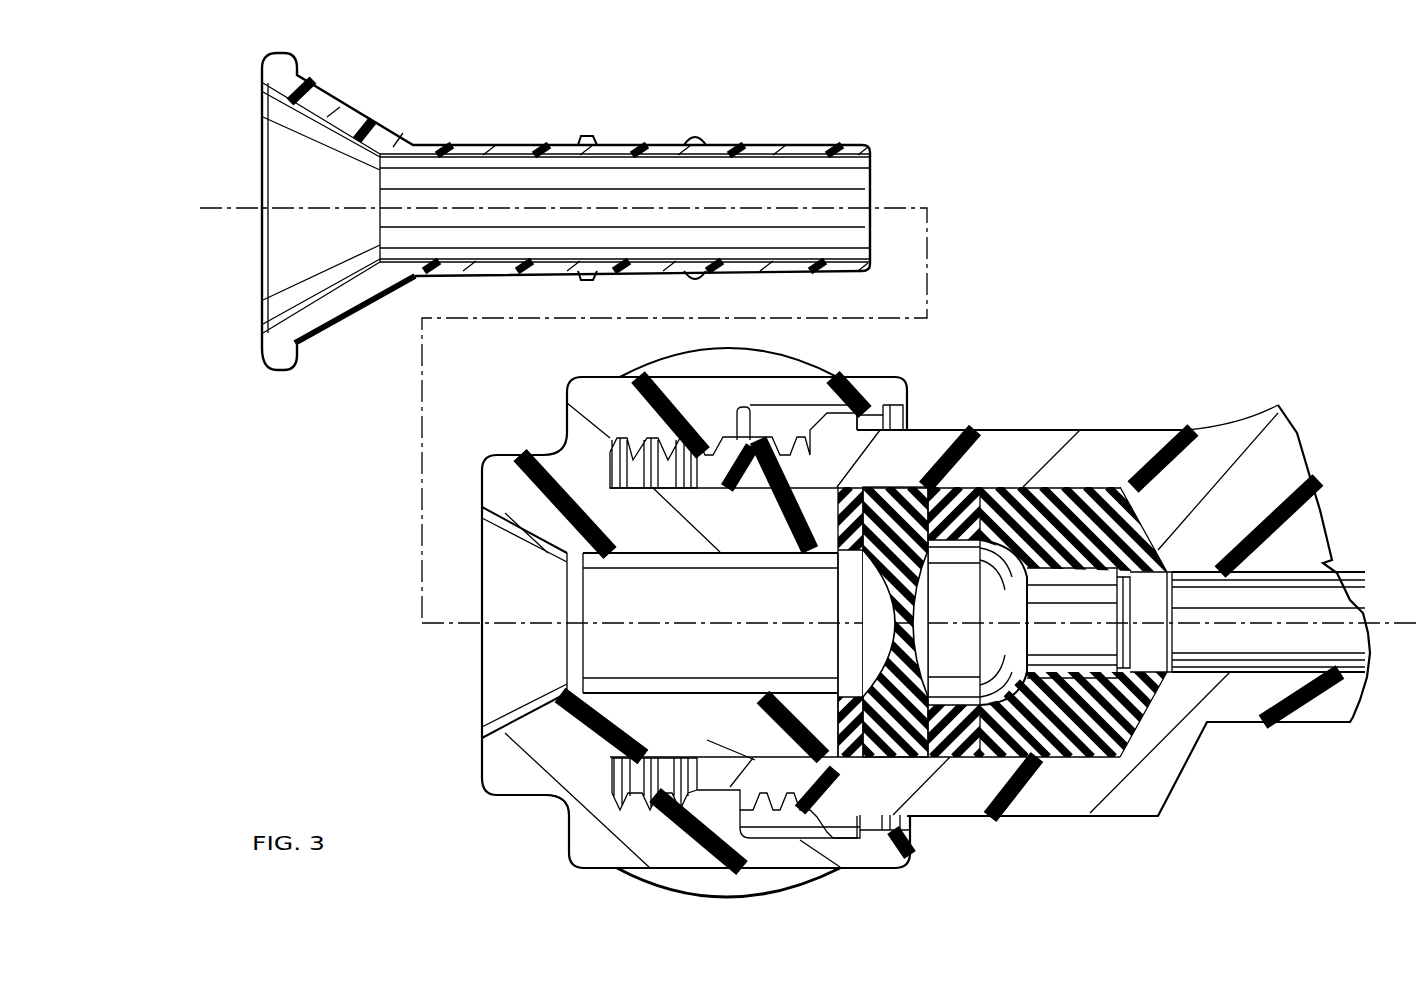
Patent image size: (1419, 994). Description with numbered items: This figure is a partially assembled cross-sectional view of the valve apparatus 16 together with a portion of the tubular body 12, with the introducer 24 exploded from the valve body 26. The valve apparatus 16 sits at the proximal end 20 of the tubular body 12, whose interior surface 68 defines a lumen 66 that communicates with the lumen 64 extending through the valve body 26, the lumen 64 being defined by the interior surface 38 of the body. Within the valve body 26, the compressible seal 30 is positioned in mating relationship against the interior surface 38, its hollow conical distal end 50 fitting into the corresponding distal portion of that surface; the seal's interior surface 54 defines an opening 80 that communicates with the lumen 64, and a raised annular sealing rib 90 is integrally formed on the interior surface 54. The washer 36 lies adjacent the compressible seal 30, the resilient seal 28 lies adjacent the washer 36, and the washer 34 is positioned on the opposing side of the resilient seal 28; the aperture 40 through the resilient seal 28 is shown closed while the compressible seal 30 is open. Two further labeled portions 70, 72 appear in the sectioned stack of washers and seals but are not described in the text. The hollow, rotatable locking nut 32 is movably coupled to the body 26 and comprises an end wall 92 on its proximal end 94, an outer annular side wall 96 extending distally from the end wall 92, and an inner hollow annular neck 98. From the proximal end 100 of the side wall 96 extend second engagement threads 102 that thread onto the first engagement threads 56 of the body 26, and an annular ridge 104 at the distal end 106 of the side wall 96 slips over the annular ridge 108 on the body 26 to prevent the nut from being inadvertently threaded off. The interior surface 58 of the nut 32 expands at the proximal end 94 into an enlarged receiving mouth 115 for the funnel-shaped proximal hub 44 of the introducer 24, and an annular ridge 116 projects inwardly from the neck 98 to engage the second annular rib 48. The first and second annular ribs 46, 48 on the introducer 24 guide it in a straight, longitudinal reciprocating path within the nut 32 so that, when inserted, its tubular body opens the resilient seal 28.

The tubular body 12 is at (1335, 700).
The valve apparatus 16 is at (1160, 358).
The proximal end 20 is at (1240, 700).
The introducer 24 is at (255, 55).
The valve body 26 is at (1182, 422).
The resilient seal 28 is at (887, 493).
The compressible seal 30 is at (1085, 495).
The locking nut 32 is at (482, 455).
The washer 34 is at (847, 518).
The washer 36 is at (940, 495).
The interior surface 38 is at (1115, 760).
The aperture 40 is at (908, 625).
The funnel-shaped proximal hub 44 is at (357, 297).
The first annular rib 46 is at (697, 138).
The second annular rib 48 is at (590, 138).
The conical distal end 50 is at (1160, 557).
The interior surface 54 is at (1025, 675).
The first engagement threads 56 is at (745, 408).
The interior surface 58 is at (670, 692).
The lumen 64 is at (1072, 623).
The lumen 66 is at (1268, 616).
The interior surface 68 is at (1283, 670).
The washer lower portion 70 is at (858, 697).
The backup ring lower portion 72 is at (950, 710).
The opening 80 is at (1072, 645).
The raised annular sealing rib 90 is at (1125, 592).
The end wall 92 is at (560, 810).
The proximal end 94 is at (500, 778).
The outer annular side wall 96 is at (670, 845).
The inner annular neck 98 is at (782, 655).
The proximal end 100 is at (640, 870).
The second engagement threads 102 is at (640, 830).
The annular ridge 104 is at (880, 840).
The distal end 106 is at (780, 383).
The annular ridge 108 is at (837, 423).
The enlarged receiving mouth 115 is at (520, 535).
The annular ridge 116 is at (572, 690).